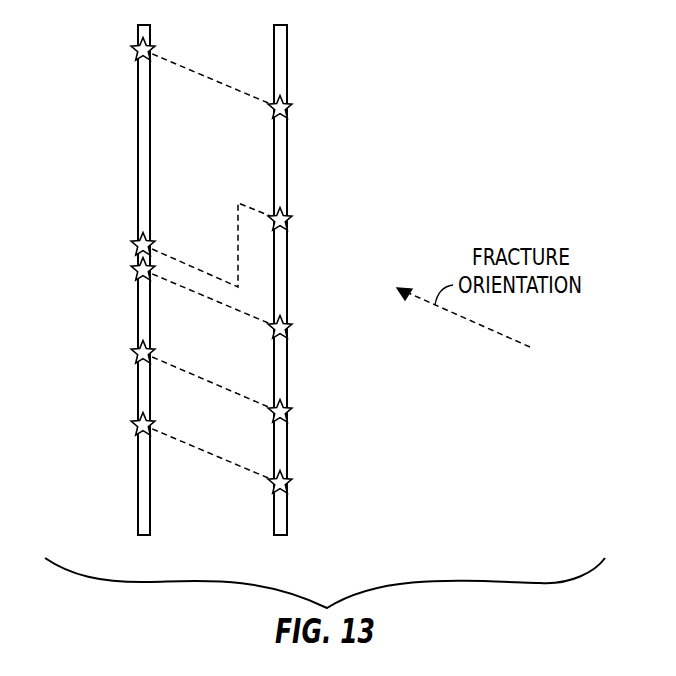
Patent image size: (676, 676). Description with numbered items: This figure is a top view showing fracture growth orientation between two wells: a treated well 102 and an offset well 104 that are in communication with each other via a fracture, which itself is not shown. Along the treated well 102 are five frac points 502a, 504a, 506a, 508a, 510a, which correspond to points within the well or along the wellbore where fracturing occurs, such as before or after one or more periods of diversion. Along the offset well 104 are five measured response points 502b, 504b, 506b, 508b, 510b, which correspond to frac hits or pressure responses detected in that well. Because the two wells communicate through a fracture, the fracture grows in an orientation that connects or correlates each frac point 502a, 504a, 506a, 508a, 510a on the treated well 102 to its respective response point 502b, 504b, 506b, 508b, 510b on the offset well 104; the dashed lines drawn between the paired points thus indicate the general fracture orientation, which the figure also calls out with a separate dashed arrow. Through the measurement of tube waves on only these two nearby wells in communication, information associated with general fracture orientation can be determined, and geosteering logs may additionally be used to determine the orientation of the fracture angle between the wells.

The treated well 102 is at (278, 538).
The offset well 104 is at (142, 538).
The frac point 502a is at (286, 478).
The frac point 504a is at (286, 407).
The frac point 506a is at (318, 317).
The frac point 508a is at (286, 215).
The frac point 510a is at (286, 103).
The response point 502b is at (136, 420).
The response point 504b is at (136, 348).
The response point 506b is at (136, 265).
The response point 508b is at (136, 240).
The response point 510b is at (136, 44).